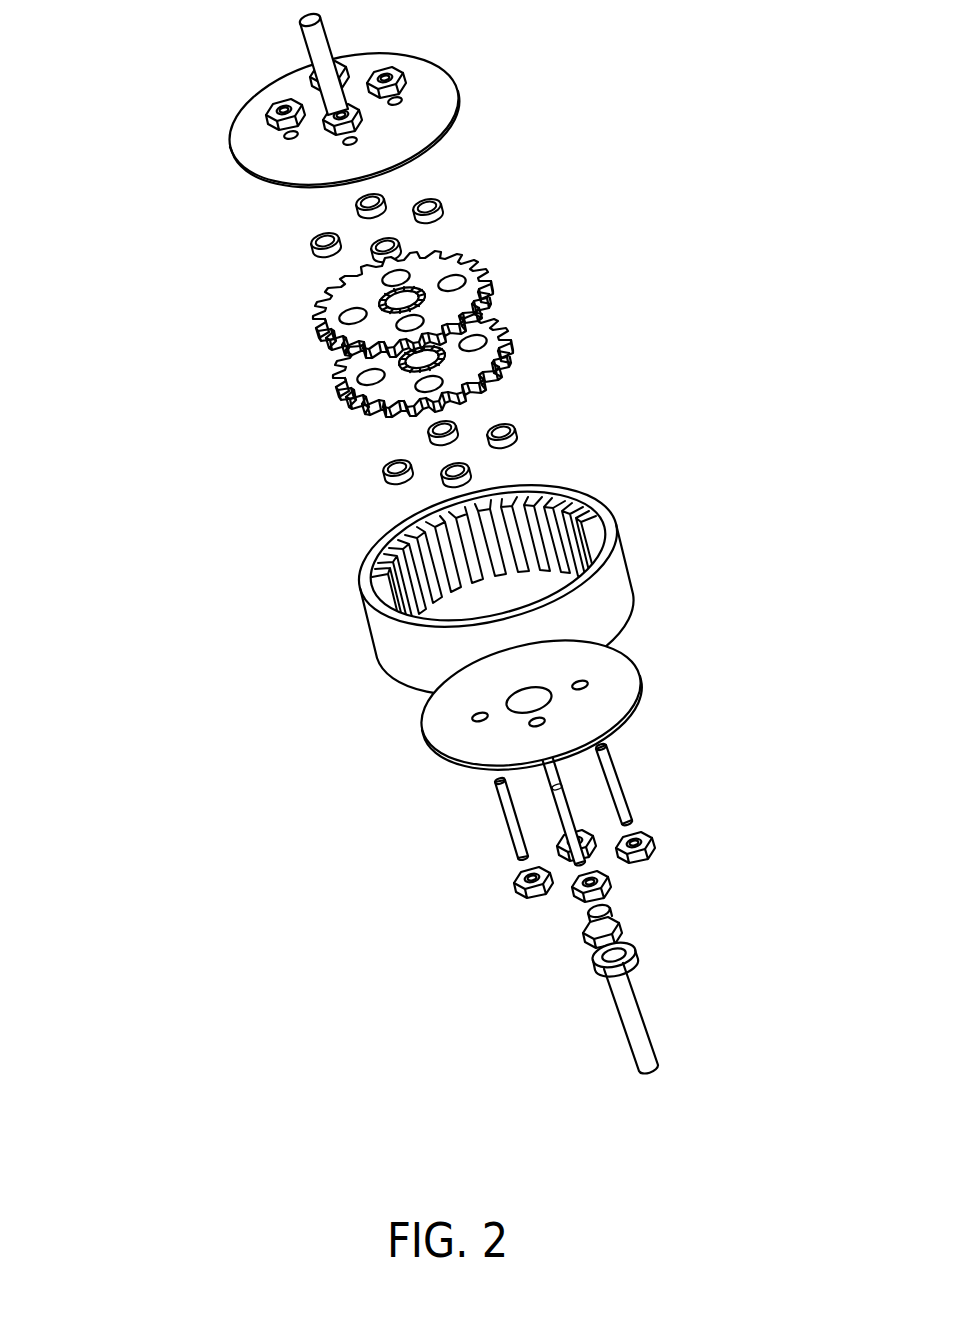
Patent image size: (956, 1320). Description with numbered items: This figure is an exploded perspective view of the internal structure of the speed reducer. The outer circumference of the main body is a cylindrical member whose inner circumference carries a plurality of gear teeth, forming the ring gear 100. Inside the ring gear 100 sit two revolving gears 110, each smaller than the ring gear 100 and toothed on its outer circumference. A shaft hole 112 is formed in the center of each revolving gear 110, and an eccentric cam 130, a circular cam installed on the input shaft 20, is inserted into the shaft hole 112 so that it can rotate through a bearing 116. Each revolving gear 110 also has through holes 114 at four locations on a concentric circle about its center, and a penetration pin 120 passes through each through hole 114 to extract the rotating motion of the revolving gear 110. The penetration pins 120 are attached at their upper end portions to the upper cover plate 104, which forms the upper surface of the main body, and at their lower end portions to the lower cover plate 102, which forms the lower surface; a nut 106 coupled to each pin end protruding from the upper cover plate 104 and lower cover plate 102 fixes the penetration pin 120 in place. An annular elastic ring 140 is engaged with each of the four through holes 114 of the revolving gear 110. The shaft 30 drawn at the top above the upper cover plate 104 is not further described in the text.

The input shaft 20 is at (656, 1037).
The output shaft 30 is at (299, 38).
The ring gear 100 is at (368, 632).
The lower cover plate 102 is at (633, 660).
The upper cover plate 104 is at (440, 72).
The nut 106 is at (338, 133).
The revolving gear 110 is at (410, 356).
The shaft hole 112 is at (325, 333).
The through hole 114 is at (380, 294).
The bearing 116 is at (447, 358).
The penetration pin 120 is at (562, 828).
The eccentric cam 130 is at (635, 950).
The elastic ring 140 is at (400, 243).